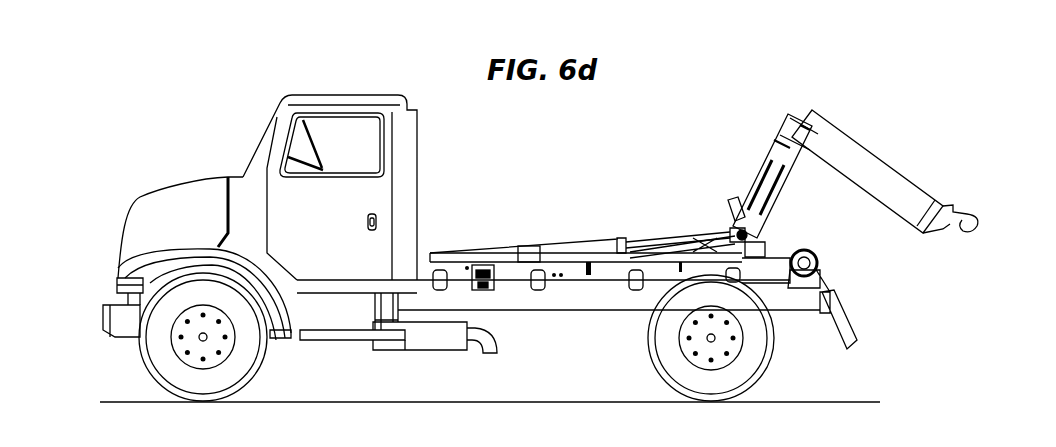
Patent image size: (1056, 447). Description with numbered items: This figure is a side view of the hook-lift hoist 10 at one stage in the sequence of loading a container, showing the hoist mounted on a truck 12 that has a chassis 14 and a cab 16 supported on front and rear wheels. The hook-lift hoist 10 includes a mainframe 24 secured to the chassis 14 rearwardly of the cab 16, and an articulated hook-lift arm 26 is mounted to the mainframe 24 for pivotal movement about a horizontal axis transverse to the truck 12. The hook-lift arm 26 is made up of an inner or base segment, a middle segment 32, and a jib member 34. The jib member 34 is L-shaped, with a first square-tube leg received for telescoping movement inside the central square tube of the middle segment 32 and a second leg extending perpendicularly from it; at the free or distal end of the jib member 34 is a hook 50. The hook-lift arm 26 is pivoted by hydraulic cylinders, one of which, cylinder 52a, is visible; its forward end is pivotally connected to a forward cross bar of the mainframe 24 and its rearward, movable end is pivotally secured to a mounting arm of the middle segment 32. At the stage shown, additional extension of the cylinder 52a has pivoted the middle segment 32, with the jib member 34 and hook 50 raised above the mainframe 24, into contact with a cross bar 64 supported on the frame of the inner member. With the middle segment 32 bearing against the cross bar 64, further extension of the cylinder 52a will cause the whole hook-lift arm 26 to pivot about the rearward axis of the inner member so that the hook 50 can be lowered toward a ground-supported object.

The hook-lift hoist 10 is at (628, 200).
The truck 12 is at (236, 166).
The chassis 14 is at (520, 305).
The cab 16 is at (165, 198).
The mainframe 24 is at (610, 277).
The hook-lift arm 26 is at (753, 176).
The middle segment 32 is at (717, 250).
The jib member 34 is at (876, 156).
The hook 50 is at (955, 233).
The hydraulic cylinder 52a is at (587, 247).
The cross bar 64 is at (758, 243).